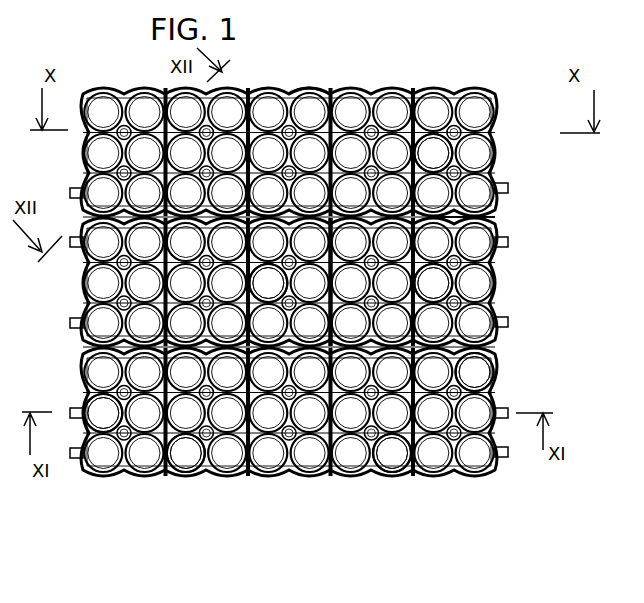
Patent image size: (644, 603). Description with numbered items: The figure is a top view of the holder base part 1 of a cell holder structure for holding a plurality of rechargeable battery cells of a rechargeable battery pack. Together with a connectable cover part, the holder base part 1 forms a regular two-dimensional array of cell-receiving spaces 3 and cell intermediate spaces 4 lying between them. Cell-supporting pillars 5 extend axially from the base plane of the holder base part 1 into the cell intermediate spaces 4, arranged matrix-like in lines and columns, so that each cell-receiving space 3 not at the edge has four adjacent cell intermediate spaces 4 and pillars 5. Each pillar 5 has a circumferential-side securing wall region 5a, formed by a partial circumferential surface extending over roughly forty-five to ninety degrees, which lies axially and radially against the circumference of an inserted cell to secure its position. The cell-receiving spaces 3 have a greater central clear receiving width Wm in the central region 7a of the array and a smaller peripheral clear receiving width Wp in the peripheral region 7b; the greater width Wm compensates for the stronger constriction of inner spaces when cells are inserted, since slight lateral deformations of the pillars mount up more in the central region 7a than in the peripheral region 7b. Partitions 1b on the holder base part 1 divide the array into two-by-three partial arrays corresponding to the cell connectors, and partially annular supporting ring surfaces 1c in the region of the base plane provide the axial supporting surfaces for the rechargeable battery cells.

The holder base part 1 is at (405, 74).
The partition 1b is at (307, 128).
The supporting ring surface 1c is at (497, 374).
The cell-receiving space 3 is at (478, 226).
The cell intermediate space 4 is at (460, 269).
The cell-supporting pillar 5 is at (442, 160).
The securing wall region 5a is at (403, 468).
The central region of the array 7a is at (344, 300).
The peripheral region of the array 7b is at (192, 458).
The peripheral clear receiving width Wp is at (107, 420).
The central clear receiving width Wm is at (267, 272).